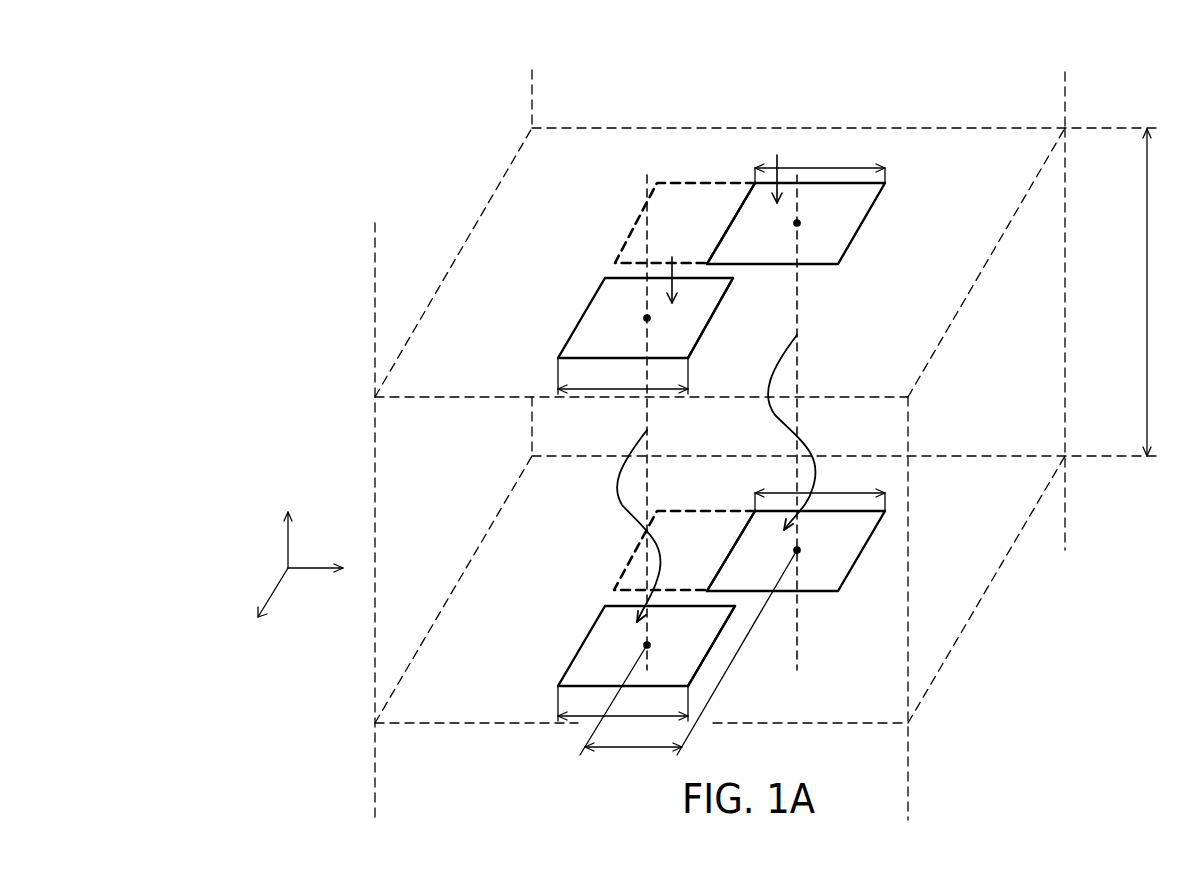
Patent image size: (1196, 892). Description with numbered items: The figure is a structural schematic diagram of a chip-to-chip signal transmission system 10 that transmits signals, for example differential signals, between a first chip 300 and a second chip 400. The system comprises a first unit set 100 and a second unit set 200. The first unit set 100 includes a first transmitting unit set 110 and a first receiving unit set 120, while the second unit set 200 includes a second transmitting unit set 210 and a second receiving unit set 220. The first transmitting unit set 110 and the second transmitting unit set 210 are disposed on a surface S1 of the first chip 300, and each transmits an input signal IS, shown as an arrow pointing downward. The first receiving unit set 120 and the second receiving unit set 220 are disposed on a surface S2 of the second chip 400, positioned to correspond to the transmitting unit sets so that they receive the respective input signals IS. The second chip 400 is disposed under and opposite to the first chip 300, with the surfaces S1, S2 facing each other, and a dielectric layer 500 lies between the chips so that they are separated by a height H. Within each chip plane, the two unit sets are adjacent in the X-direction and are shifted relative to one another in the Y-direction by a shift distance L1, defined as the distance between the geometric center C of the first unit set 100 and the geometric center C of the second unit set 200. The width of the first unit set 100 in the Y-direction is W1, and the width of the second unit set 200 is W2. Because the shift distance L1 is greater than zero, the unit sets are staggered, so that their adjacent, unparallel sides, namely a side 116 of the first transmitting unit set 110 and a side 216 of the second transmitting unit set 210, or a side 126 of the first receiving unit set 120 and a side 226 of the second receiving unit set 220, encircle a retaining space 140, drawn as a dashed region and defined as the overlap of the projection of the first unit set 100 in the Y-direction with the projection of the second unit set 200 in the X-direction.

The chip-to-chip signal transmission system 10 is at (1120, 756).
The first unit set 100 is at (590, 482).
The first transmitting unit set 110 is at (573, 330).
The side of the first transmitting unit set 116 is at (696, 282).
The first receiving unit set 120 is at (573, 657).
The side of the first receiving unit set 126 is at (696, 610).
The retaining space 140 is at (620, 247).
The second unit set 200 is at (849, 407).
The second transmitting unit set 210 is at (860, 198).
The side of the second transmitting unit set 216 is at (745, 197).
The second receiving unit set 220 is at (832, 592).
The side of the second receiving unit set 226 is at (745, 525).
The first chip 300 is at (1027, 92).
The second chip 400 is at (1040, 524).
The dielectric layer 500 is at (1025, 326).
The surface of the first chip S1 is at (1003, 236).
The surface of the second chip S2 is at (1003, 565).
The height H is at (1155, 292).
The width of the first unit set W1 is at (623, 539).
The width of the second unit set W2 is at (820, 325).
The shift distance L1 is at (688, 666).
The input signal IS is at (607, 532).
The geometric center C is at (647, 318).